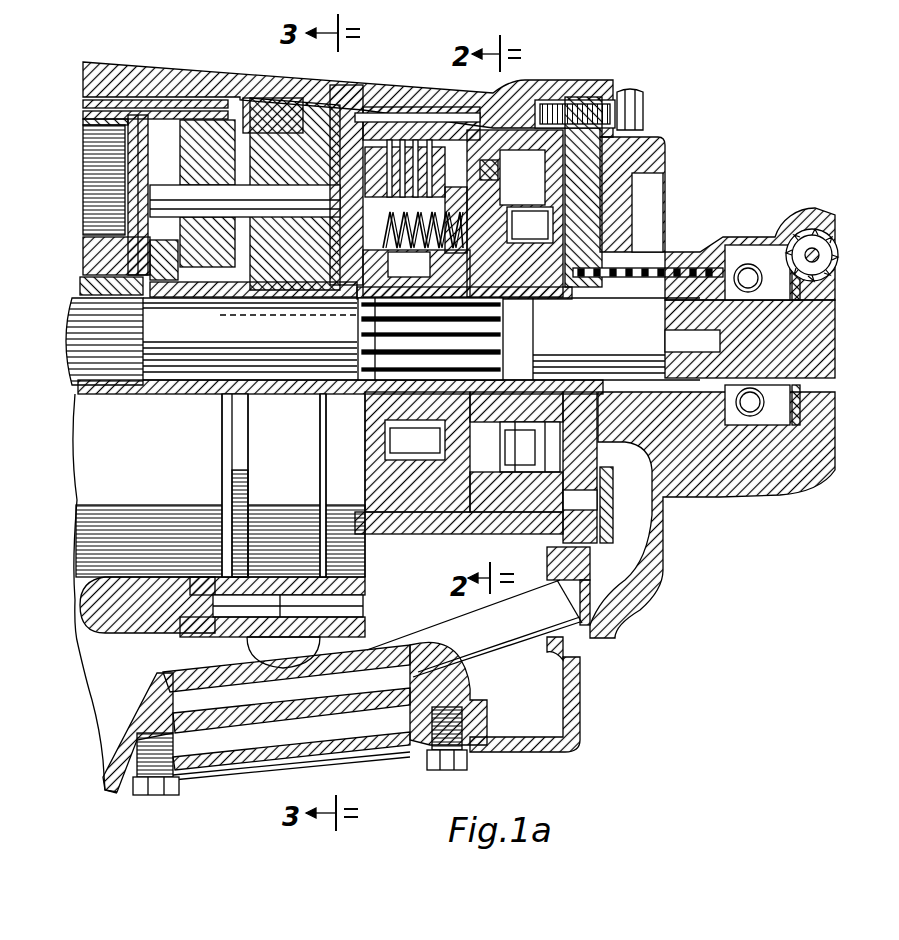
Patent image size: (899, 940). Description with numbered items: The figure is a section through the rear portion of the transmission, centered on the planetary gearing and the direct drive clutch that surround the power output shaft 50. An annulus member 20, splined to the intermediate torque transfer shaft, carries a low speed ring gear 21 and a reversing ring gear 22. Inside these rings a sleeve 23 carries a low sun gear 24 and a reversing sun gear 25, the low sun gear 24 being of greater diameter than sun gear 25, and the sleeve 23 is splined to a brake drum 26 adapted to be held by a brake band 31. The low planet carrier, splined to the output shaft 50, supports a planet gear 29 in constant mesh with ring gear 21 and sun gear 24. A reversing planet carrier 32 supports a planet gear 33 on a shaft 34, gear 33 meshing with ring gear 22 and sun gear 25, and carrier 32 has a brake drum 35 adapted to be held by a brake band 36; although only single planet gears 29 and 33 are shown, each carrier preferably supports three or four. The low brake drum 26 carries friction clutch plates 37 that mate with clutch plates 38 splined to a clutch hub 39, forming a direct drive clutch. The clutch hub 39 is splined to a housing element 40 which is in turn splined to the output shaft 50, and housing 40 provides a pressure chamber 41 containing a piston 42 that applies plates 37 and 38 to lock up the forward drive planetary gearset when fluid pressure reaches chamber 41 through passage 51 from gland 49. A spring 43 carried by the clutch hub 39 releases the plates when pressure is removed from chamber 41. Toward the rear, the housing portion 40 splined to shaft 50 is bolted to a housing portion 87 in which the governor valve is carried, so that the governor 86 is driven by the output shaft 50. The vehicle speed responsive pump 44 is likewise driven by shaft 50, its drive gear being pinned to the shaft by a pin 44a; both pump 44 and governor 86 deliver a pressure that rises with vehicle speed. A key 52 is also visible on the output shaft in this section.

The annulus member 20 is at (158, 100).
The low speed ring gear 21 is at (95, 116).
The reversing ring gear 22 is at (186, 111).
The sleeve 23 is at (328, 295).
The low sun gear 24 is at (97, 242).
The reversing sun gear 25 is at (206, 285).
The brake drum 26 is at (412, 147).
The planet gear 29 is at (100, 150).
The brake band 31 is at (440, 113).
The reversing planet carrier 32 is at (172, 282).
The planet gear 33 is at (192, 148).
The shaft 34 is at (255, 200).
The brake drum 35 is at (305, 118).
The brake band 36 is at (282, 100).
The friction clutch plates 37 is at (396, 147).
The clutch plates 38 is at (345, 204).
The clutch hub 39 is at (440, 213).
The housing element 40 is at (490, 285).
The pressure chamber 41 is at (505, 182).
The piston 42 is at (500, 205).
The spring 43 is at (475, 222).
The pump 44 is at (632, 194).
The pin 44a is at (578, 278).
The gland 49 is at (722, 247).
The power output shaft 50 is at (178, 357).
The passage 51 is at (540, 272).
The key 52 is at (665, 338).
The governor 86 is at (535, 490).
The housing portion 87 is at (512, 395).